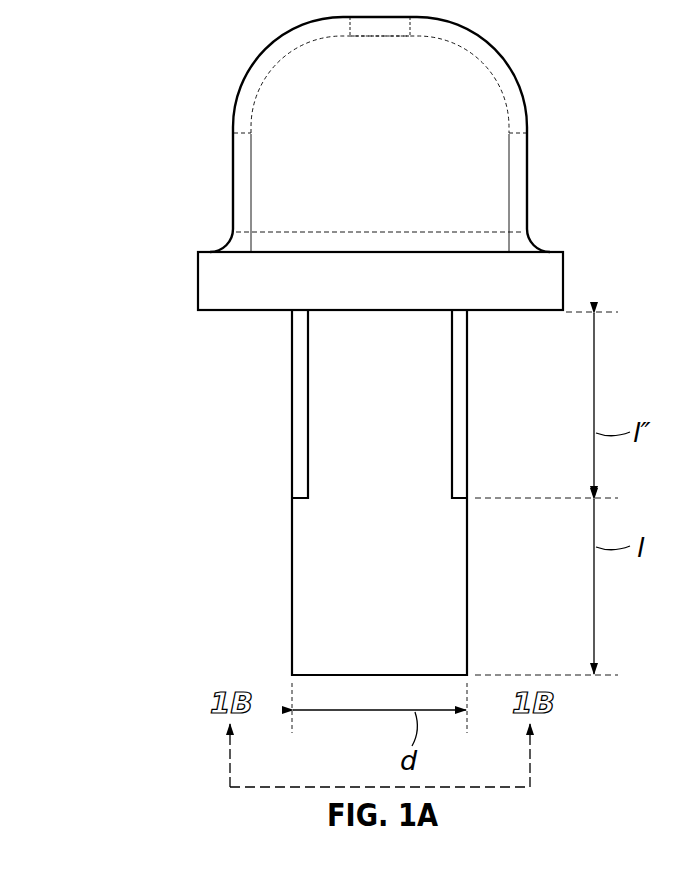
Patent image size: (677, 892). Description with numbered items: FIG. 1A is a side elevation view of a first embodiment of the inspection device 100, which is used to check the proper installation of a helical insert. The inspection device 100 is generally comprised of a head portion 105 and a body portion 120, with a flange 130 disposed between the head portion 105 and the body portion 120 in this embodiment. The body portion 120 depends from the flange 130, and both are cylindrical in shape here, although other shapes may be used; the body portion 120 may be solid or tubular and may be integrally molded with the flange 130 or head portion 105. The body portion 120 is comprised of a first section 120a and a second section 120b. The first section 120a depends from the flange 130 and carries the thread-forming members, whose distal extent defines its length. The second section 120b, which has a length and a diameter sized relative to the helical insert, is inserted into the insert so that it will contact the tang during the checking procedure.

The inspection device 100 is at (339, 346).
The head portion 105 is at (474, 73).
The flange 130 is at (557, 270).
The body portion 120 is at (366, 492).
The first section 120a is at (366, 404).
The second section 120b is at (333, 639).